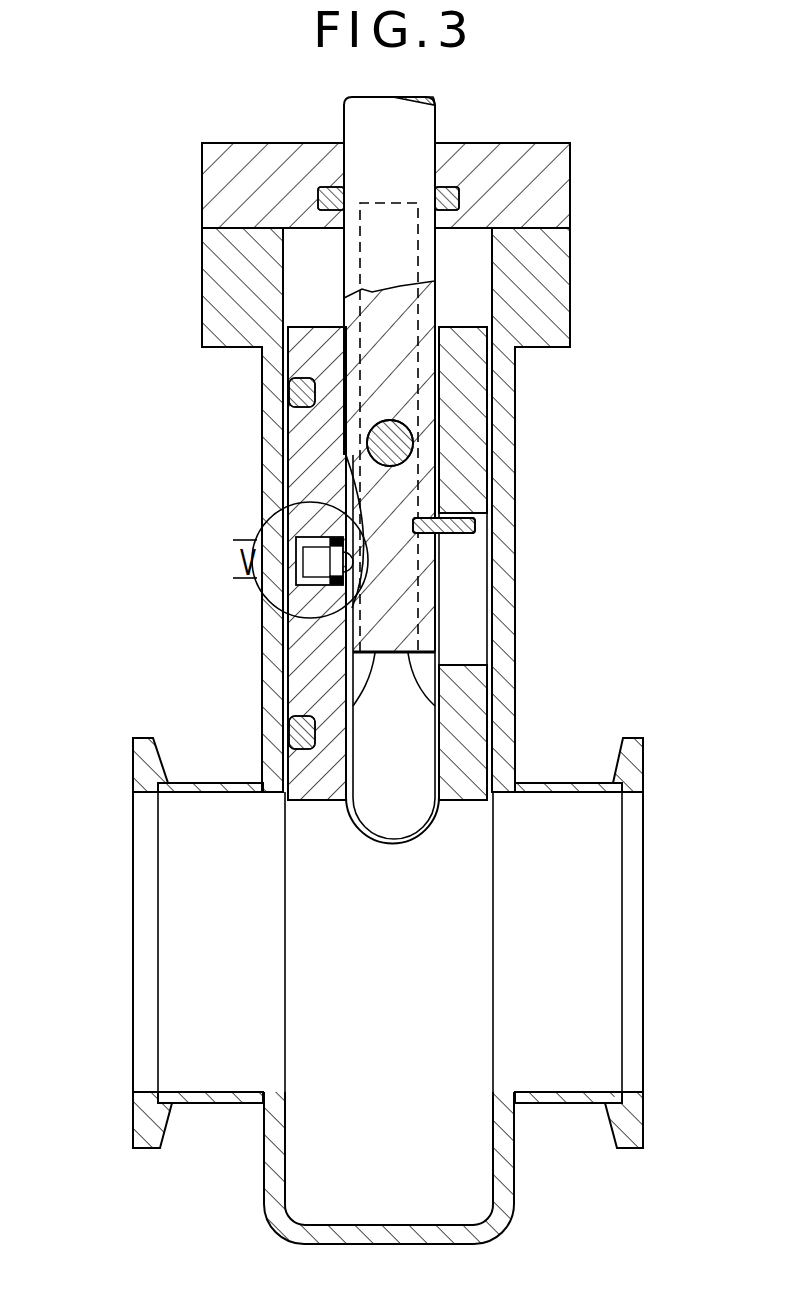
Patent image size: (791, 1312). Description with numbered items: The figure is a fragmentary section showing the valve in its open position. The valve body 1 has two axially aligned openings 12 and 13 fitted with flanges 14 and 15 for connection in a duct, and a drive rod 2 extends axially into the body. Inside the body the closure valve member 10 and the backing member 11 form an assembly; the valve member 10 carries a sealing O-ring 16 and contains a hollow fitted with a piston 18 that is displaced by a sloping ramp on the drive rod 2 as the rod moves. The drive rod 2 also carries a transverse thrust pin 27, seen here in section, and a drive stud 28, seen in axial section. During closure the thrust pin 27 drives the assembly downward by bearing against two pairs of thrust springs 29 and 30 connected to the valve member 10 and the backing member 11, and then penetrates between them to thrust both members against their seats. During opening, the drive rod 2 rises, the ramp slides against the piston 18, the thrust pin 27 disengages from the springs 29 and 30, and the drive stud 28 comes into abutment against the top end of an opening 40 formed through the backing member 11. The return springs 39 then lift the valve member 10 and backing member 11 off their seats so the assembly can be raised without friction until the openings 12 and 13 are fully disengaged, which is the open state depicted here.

The valve body 1 is at (503, 612).
The drive rod 2 is at (372, 128).
The closure valve member 10 is at (318, 655).
The backing member 11 is at (466, 471).
The opening 12 is at (185, 887).
The opening 13 is at (583, 892).
The flange 14 is at (148, 755).
The flange 15 is at (635, 760).
The sealing O-ring 16 is at (291, 735).
The piston 18 is at (310, 535).
The transverse thrust pin 27 is at (398, 440).
The drive stud 28 is at (457, 534).
The thrust springs 29 is at (420, 703).
The thrust springs 30 is at (369, 670).
The return springs 39 is at (393, 843).
The opening 40 is at (468, 645).